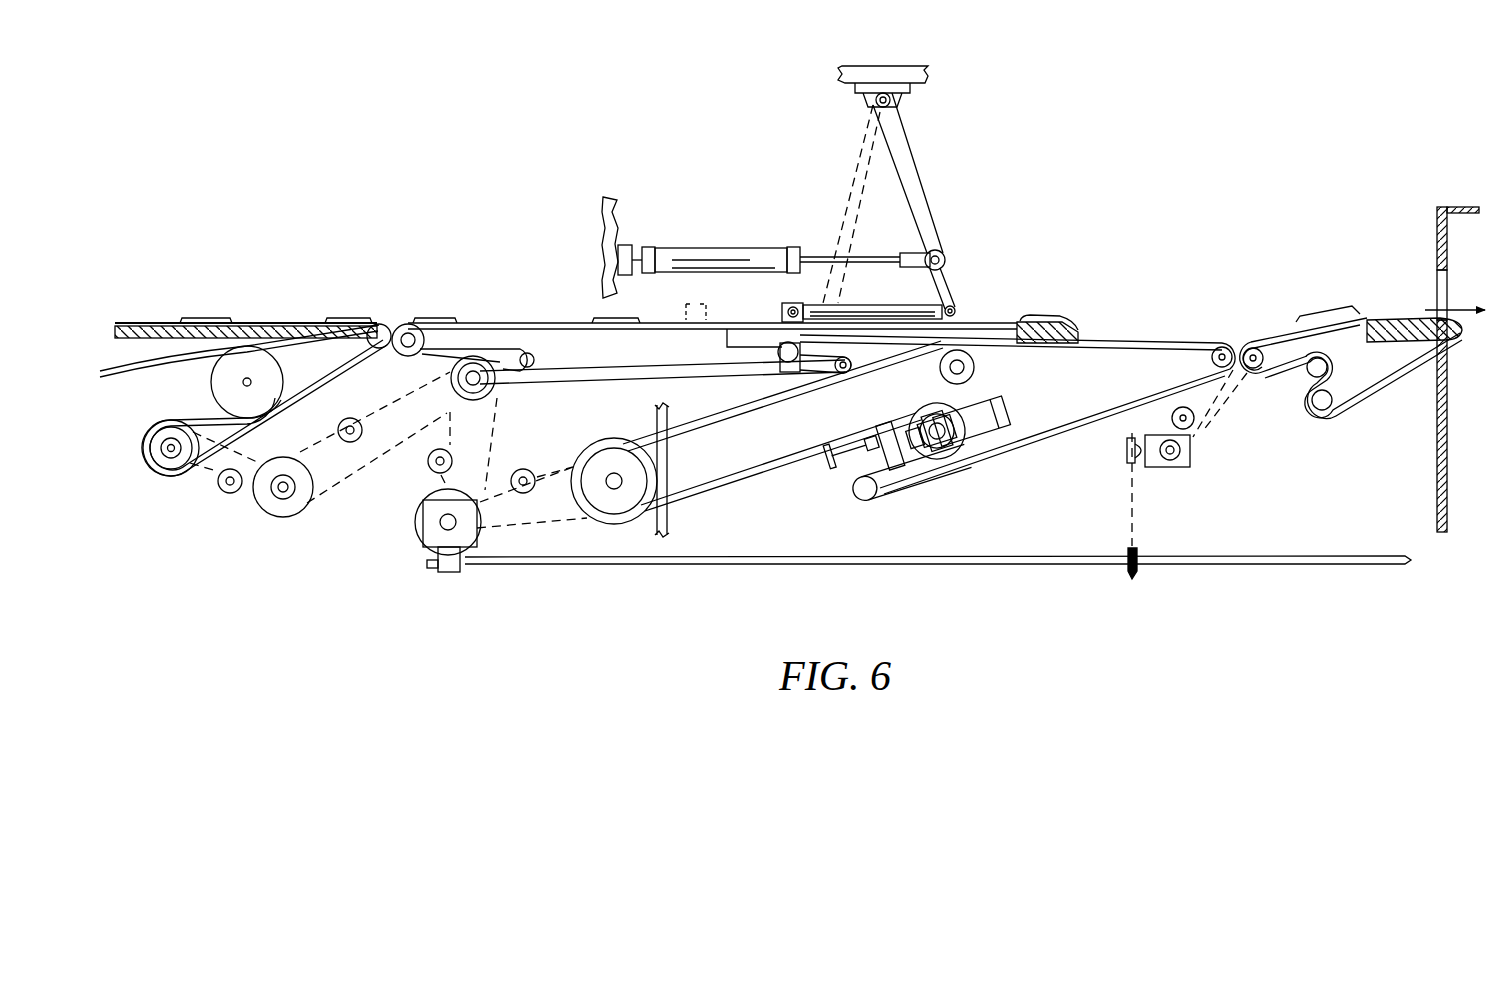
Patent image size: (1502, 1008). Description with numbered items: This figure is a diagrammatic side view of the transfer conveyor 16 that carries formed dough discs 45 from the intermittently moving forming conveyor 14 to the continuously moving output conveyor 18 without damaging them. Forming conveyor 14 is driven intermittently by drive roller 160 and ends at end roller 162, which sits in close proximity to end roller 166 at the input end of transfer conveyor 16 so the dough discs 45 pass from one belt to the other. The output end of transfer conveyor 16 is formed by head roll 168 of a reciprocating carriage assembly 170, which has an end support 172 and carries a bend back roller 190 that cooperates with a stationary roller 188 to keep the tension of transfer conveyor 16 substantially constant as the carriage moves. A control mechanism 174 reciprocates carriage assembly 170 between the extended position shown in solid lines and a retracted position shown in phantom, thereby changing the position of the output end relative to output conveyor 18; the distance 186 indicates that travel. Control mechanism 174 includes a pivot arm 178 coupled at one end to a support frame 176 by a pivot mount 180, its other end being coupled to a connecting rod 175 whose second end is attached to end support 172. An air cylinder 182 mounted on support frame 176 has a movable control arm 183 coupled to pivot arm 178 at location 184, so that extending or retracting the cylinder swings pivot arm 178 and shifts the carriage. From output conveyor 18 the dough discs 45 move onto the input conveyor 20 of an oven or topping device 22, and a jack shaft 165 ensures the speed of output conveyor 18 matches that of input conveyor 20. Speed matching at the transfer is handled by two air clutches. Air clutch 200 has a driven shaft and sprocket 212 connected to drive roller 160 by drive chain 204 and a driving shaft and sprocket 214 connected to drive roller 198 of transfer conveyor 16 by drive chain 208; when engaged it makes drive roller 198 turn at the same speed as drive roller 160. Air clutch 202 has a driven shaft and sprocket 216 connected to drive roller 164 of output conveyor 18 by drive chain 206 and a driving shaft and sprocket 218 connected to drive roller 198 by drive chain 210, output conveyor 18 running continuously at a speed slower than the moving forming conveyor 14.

The forming conveyor 14 is at (300, 323).
The transfer conveyor 16 is at (567, 323).
The output conveyor 18 is at (1168, 342).
The input conveyor 20 is at (1405, 320).
The oven or topping device 22 is at (1447, 206).
The dough discs 45 is at (220, 322).
The drive roller 160 is at (172, 455).
The end roller 162 is at (389, 329).
The drive roller 164 is at (610, 477).
The jack shaft 165 is at (1026, 564).
The end roller 166 is at (418, 327).
The head roll 168 is at (1066, 344).
The reciprocating carriage assembly 170 is at (1012, 341).
The end support 172 is at (782, 308).
The control mechanism 174 is at (942, 192).
The connecting rod 175 is at (893, 306).
The support frame 176 is at (860, 72).
The pivot arm 178 is at (904, 165).
The pivot mount 180 is at (876, 106).
The air cylinder 182 is at (744, 248).
The movable control arm 183 is at (859, 263).
The location 184 is at (941, 251).
The stroke distance 186 is at (967, 228).
The stationary roller 188 is at (844, 358).
The bend back roller 190 is at (780, 353).
The drive roller 198 is at (450, 371).
The air clutch 200 is at (266, 530).
The air clutch 202 is at (420, 550).
The drive chain 204 is at (220, 470).
The drive chain 206 is at (540, 526).
The drive chain 208 is at (418, 519).
The drive chain 210 is at (496, 455).
The driven shaft and sprocket 212 is at (285, 494).
The driving shaft and sprocket 214 is at (280, 457).
The driven shaft and sprocket 216 is at (447, 523).
The driving shaft and sprocket 218 is at (437, 514).